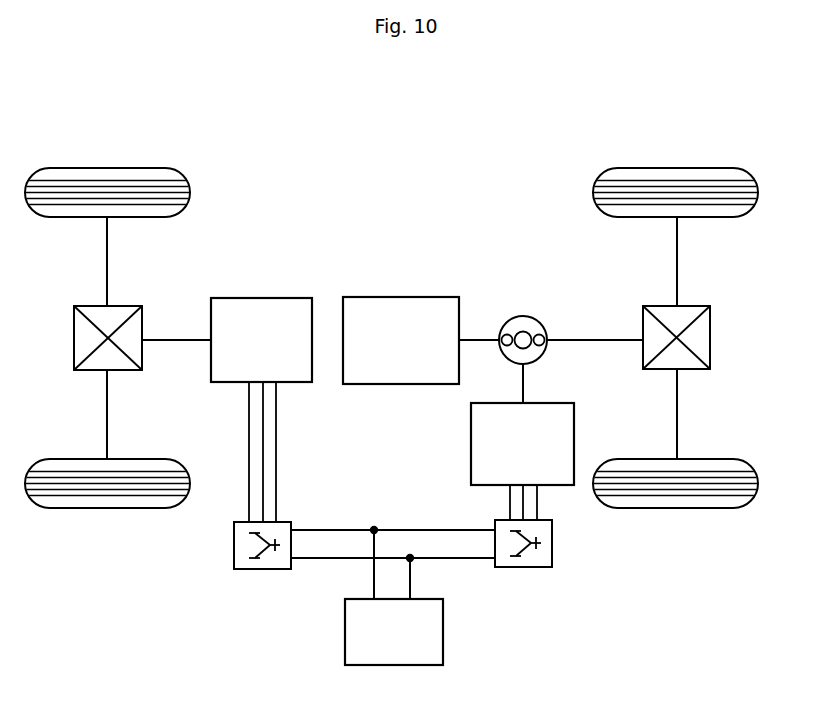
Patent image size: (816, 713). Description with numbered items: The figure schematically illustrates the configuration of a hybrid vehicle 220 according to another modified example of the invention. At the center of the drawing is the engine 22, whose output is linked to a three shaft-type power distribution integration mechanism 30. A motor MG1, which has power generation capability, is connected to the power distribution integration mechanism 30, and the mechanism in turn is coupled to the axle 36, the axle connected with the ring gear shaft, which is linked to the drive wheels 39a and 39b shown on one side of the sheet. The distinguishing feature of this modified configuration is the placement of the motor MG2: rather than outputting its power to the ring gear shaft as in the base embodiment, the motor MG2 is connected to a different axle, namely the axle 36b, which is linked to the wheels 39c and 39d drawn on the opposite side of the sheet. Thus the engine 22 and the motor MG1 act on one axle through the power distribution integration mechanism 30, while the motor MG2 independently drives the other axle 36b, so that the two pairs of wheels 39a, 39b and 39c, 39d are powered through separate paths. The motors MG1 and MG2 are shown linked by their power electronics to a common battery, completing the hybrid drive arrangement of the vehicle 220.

The hybrid vehicle 220 is at (415, 150).
The engine 22 is at (400, 297).
The power distribution integration mechanism 30 is at (524, 316).
The motor MG1 is at (469, 444).
The motor MG2 is at (260, 298).
The axle 36 is at (677, 257).
The axle 36b is at (107, 245).
The drive wheel 39a is at (677, 168).
The drive wheel 39b is at (677, 508).
The wheel 39c is at (107, 168).
The wheel 39d is at (107, 508).